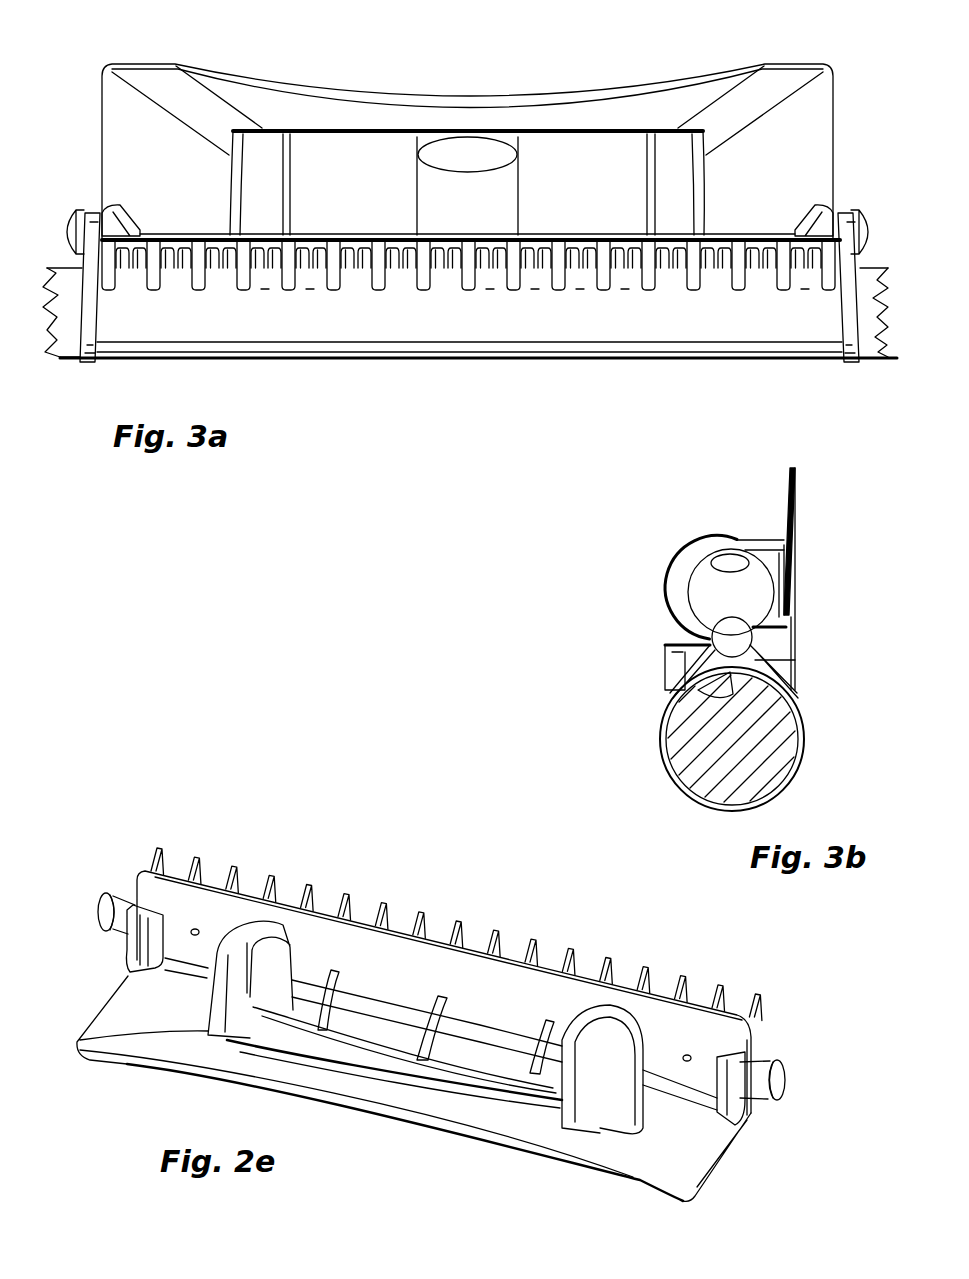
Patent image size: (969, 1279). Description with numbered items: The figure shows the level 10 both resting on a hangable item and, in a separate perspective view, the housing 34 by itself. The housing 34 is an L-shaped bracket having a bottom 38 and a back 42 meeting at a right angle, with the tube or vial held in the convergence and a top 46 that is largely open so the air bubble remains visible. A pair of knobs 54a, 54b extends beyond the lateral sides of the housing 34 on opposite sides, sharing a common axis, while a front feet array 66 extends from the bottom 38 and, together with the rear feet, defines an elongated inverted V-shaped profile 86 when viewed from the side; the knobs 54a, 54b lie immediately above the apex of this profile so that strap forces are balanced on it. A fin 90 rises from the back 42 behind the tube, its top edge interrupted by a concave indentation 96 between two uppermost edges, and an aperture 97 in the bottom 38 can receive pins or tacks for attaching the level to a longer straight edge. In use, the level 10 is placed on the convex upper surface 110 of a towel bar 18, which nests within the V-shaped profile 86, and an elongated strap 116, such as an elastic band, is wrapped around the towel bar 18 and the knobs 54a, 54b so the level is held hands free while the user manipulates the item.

In FIG. 3A, the level 10 is at (328, 58).
In FIG. 3A, the towel bar 18 is at (502, 322).
In FIG. 3B, the towel bar 18 is at (673, 781).
In FIG. 3A, the convex upper surface 110 is at (715, 287).
In FIG. 3B, the convex upper surface 110 is at (740, 674).
In FIG. 3A, the elongated strap 116 is at (95, 328).
In FIG. 3B, the elongated strap 116 is at (805, 714).
In FIG. 3B, the inverted V-shaped profile 86 is at (675, 692).
In FIG. 2E, the housing 34 is at (373, 1135).
In FIG. 2E, the bottom 38 is at (215, 907).
In FIG. 2E, the back 42 is at (563, 1137).
In FIG. 2E, the top 46 is at (592, 1017).
In FIG. 2E, the knob 54a is at (785, 1080).
In FIG. 2E, the knob 54b is at (100, 902).
In FIG. 2E, the front feet array 66 is at (375, 878).
In FIG. 2E, the fin 90 is at (123, 1040).
In FIG. 2E, the concave indentation 96 is at (421, 1132).
In FIG. 2E, the aperture 97 is at (195, 930).